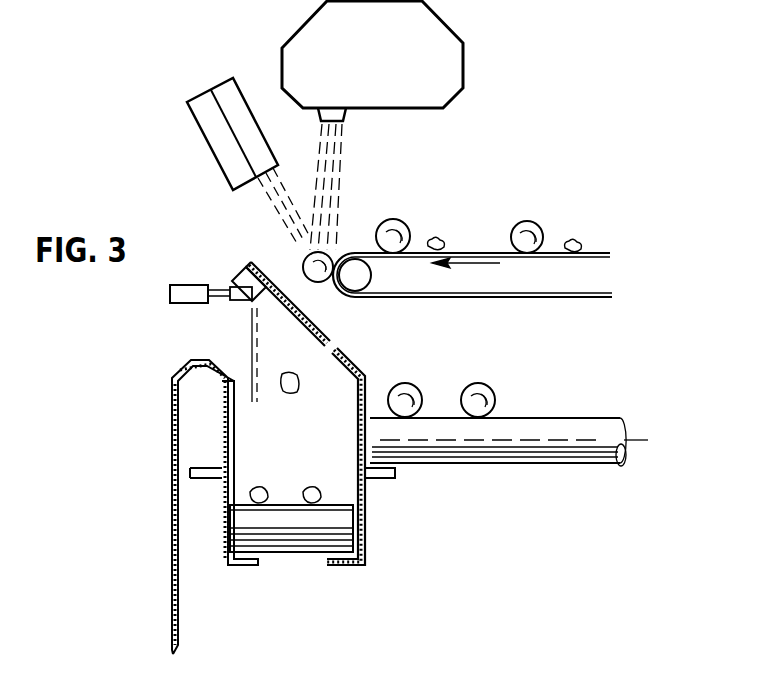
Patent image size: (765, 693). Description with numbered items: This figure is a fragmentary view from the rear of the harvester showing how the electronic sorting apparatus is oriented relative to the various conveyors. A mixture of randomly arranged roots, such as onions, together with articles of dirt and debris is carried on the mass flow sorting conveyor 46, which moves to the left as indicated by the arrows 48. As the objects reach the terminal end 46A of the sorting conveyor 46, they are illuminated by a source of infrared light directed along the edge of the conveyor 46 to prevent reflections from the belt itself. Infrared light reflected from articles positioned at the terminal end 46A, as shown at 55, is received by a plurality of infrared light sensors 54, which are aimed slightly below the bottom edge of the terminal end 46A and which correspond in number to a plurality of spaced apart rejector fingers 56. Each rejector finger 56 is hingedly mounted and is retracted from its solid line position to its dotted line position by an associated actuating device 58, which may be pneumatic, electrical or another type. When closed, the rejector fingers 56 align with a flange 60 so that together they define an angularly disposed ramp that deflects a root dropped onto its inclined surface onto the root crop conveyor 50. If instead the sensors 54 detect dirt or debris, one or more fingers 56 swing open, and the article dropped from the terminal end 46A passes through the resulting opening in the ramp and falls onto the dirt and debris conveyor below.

The mass flow sorting conveyor 46 is at (557, 299).
The terminal end 46A is at (332, 288).
The arrows 48 is at (475, 263).
The root crop conveyor 50 is at (575, 418).
The infrared light sensors 54 is at (224, 92).
The illuminated position 55 is at (292, 255).
The rejector fingers 56 is at (313, 340).
The actuating device 58 is at (186, 299).
The flange 60 is at (362, 378).